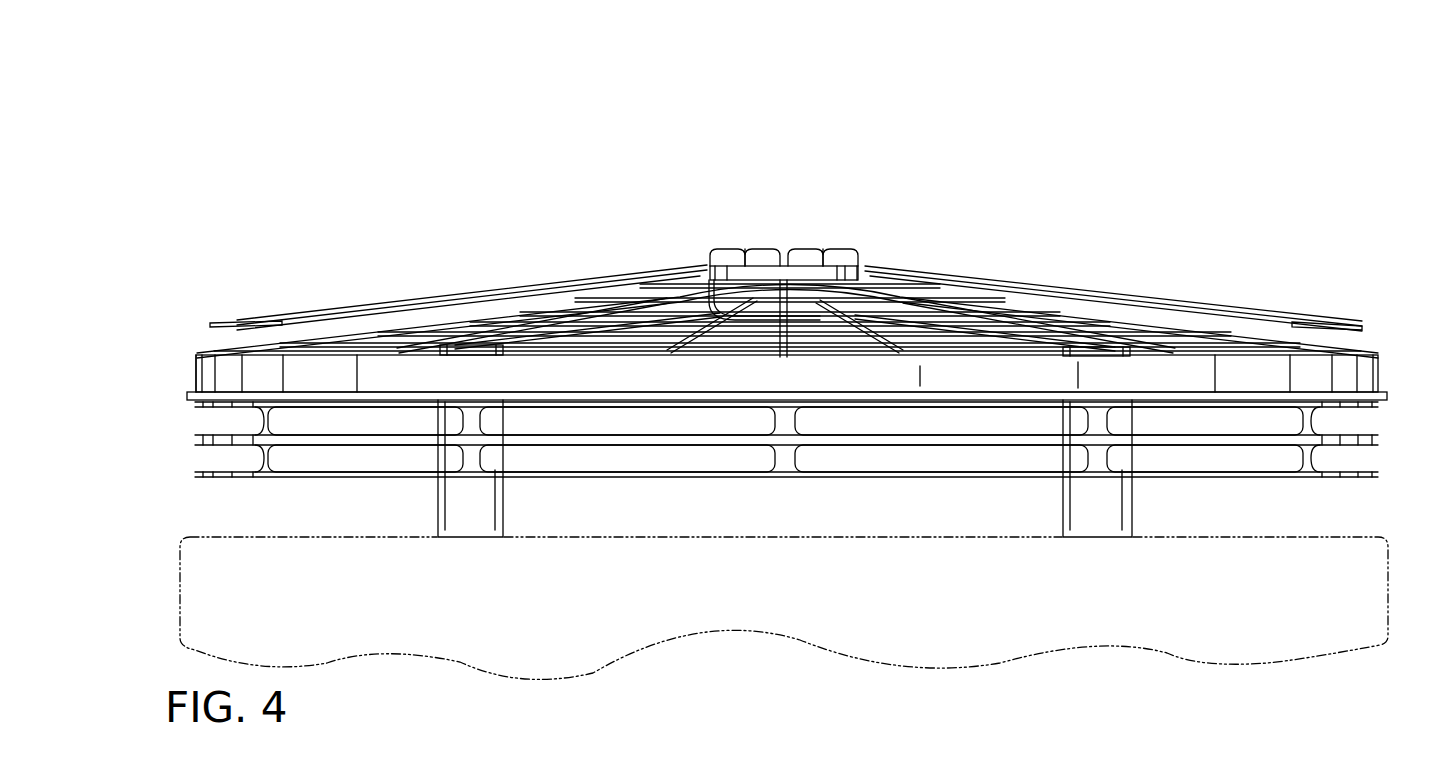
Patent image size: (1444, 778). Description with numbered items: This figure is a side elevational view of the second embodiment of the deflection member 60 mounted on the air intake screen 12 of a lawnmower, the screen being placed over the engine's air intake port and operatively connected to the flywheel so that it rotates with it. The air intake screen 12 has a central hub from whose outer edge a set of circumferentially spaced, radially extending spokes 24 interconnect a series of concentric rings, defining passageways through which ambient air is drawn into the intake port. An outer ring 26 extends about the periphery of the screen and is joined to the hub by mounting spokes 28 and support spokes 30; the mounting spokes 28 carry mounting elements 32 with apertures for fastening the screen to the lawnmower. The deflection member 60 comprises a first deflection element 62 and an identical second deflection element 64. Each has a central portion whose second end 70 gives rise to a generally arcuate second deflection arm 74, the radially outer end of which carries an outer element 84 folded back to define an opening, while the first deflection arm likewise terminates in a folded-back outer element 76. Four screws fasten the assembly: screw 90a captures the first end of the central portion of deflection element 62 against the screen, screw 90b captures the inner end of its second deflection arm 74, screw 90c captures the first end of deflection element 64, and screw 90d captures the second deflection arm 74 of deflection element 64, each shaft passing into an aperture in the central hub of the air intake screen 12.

The air intake screen 12 is at (1383, 375).
The spokes 24 is at (405, 352).
The outer ring 26 is at (192, 368).
The mounting spokes 28 is at (578, 326).
The support spokes 30 is at (255, 352).
The mounting elements 32 is at (462, 344).
The deflection member 60 is at (490, 277).
The first deflection element 62 is at (350, 300).
The second deflection element 64 is at (1078, 282).
The second end 70 is at (683, 293).
The second deflection arm 74 is at (572, 285).
The outer element 76 is at (773, 332).
The outer element 84 is at (201, 321).
The screw 90a is at (713, 248).
The screw 90b is at (804, 240).
The screw 90c is at (856, 242).
The screw 90d is at (773, 245).